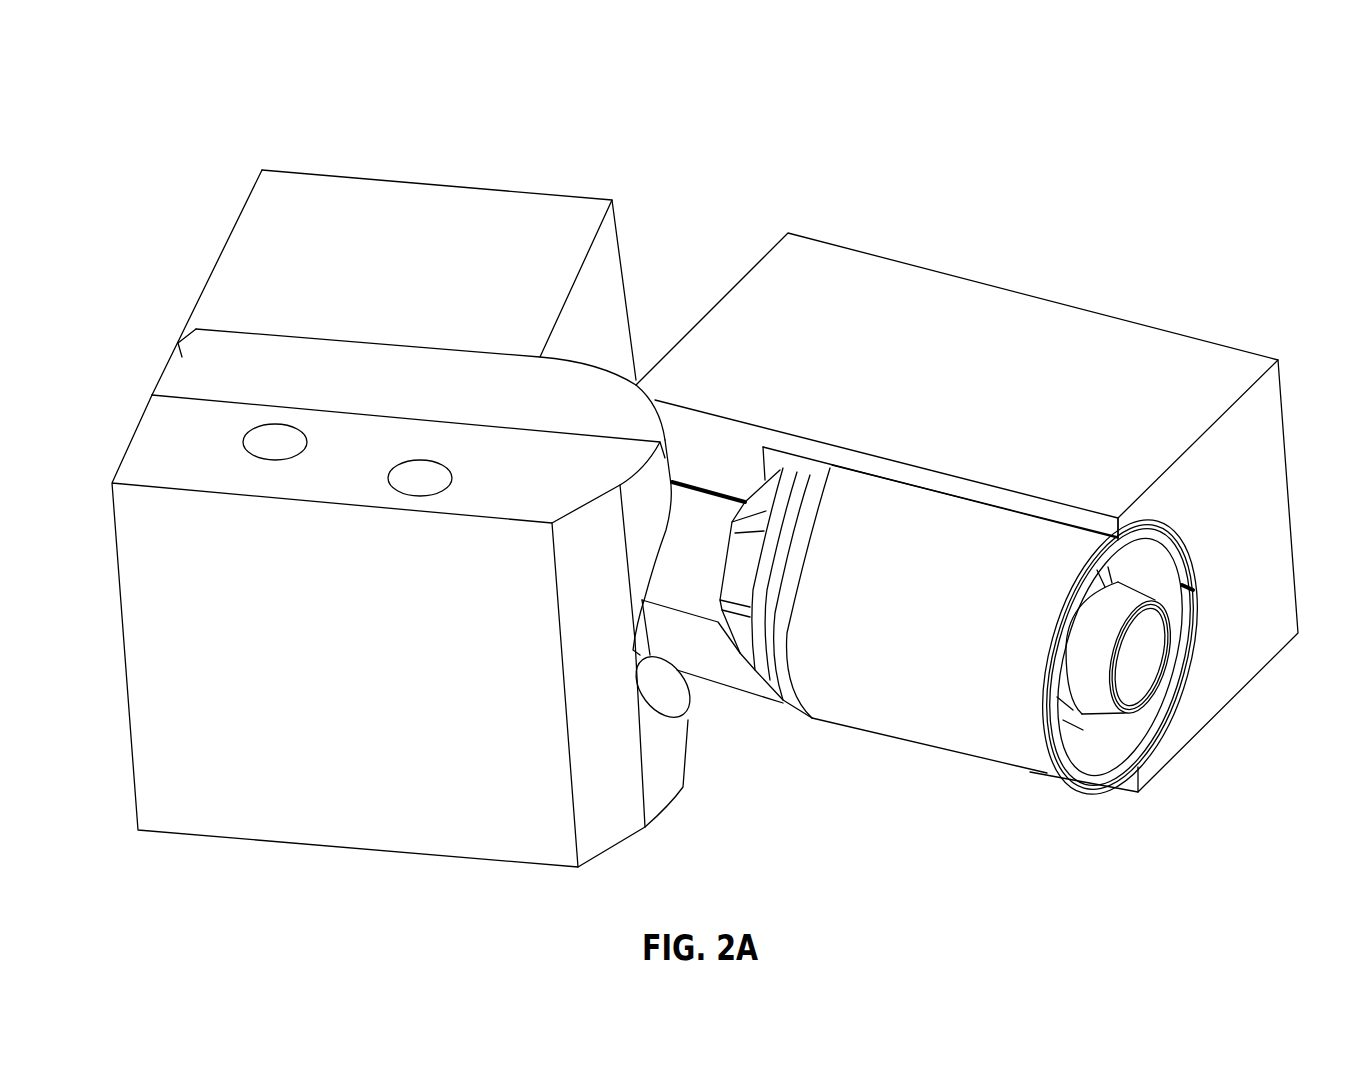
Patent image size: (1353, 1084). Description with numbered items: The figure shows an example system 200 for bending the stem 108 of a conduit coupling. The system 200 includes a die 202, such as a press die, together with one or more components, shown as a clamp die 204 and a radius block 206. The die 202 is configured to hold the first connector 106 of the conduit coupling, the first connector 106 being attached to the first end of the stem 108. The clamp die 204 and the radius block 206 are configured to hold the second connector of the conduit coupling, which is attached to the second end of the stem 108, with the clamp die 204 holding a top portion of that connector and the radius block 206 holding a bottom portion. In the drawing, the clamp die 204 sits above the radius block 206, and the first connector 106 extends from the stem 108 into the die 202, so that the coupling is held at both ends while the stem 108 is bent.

The system 200 is at (218, 69).
The die 202 is at (929, 352).
The clamp die 204 is at (470, 277).
The radius block 206 is at (282, 733).
The first connector 106 is at (903, 607).
The stem 108 is at (692, 584).